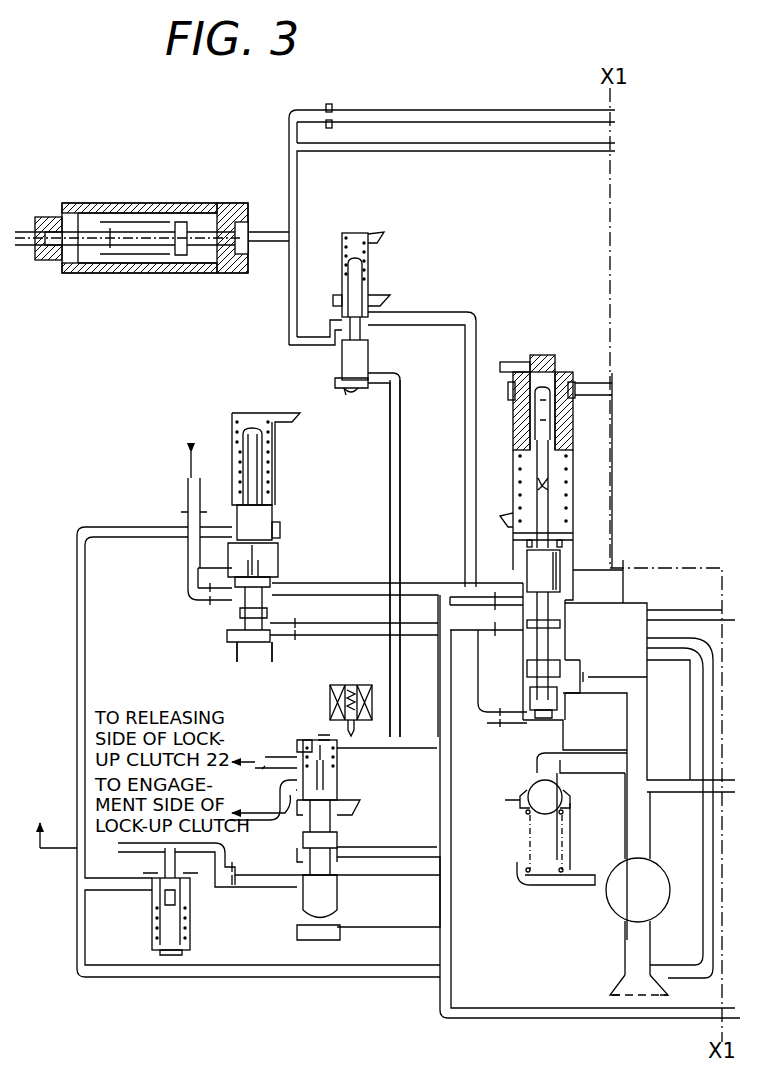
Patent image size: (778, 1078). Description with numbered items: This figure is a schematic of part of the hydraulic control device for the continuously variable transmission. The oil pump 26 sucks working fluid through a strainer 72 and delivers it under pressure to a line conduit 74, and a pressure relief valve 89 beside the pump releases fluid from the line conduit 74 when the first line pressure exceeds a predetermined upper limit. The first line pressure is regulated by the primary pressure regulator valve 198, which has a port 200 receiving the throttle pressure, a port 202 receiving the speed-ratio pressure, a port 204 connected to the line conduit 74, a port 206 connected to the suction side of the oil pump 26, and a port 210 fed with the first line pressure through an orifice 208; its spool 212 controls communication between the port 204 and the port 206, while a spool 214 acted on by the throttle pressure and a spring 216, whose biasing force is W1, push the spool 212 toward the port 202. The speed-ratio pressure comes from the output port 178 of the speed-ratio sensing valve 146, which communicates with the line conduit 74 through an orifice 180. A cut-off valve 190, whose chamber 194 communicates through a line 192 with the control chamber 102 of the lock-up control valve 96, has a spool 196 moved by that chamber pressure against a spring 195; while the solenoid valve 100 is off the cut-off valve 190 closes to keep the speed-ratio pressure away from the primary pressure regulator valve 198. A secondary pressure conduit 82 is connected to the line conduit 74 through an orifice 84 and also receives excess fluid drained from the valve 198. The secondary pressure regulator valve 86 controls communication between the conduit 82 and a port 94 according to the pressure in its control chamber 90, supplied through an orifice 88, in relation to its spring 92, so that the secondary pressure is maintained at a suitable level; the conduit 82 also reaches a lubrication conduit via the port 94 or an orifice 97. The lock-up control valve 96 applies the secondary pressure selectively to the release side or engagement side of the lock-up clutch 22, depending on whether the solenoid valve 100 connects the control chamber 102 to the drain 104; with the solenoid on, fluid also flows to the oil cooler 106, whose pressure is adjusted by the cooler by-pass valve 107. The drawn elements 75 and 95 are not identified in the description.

The speed-ratio sensing valve 146 is at (178, 200).
The output port 178 is at (258, 232).
The orifice 180 is at (330, 104).
The cut-off valve 190 is at (412, 254).
The chamber 194 is at (345, 389).
The spring 195 is at (366, 236).
The spool 196 is at (348, 286).
The primary pressure regulator valve 198 is at (541, 350).
The port 200 is at (570, 396).
The port 202 is at (556, 712).
The port 204 is at (600, 600).
The port 206 is at (597, 648).
The orifice 208 is at (590, 677).
The port 210 is at (565, 690).
The spool 212 is at (545, 576).
The spool 214 is at (534, 430).
The spring 216 is at (570, 466).
The biasing force of the spring W1 is at (570, 500).
The secondary pressure regulator valve 86 is at (284, 504).
The orifice 88 is at (295, 624).
The control chamber 90 is at (247, 645).
The spring 92 is at (233, 430).
The port 94 is at (230, 564).
The drain passage 95 is at (186, 488).
The orifice 97 is at (210, 600).
The lock-up control valve 96 is at (352, 838).
The solenoid valve 100 is at (372, 664).
The control chamber 102 is at (300, 744).
The drain 104 is at (322, 728).
The oil cooler 106 is at (52, 749).
The cooler by-pass valve 107 is at (148, 905).
The direct-coupling lock-up clutch 22 is at (240, 848).
The line 192 is at (400, 553).
The oil passage 75 is at (522, 594).
The orifice 84 is at (497, 634).
The secondary pressure conduit 82 is at (452, 790).
The pressure relief valve 89 is at (560, 800).
The oil pump 26 is at (624, 907).
The strainer 72 is at (615, 993).
The line conduit 74 is at (600, 642).